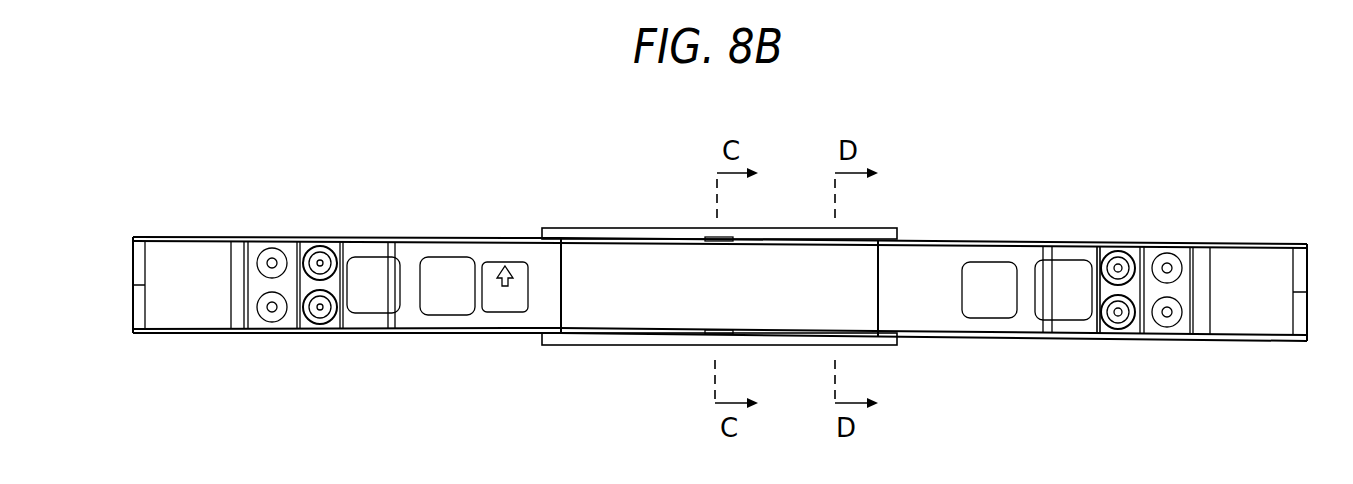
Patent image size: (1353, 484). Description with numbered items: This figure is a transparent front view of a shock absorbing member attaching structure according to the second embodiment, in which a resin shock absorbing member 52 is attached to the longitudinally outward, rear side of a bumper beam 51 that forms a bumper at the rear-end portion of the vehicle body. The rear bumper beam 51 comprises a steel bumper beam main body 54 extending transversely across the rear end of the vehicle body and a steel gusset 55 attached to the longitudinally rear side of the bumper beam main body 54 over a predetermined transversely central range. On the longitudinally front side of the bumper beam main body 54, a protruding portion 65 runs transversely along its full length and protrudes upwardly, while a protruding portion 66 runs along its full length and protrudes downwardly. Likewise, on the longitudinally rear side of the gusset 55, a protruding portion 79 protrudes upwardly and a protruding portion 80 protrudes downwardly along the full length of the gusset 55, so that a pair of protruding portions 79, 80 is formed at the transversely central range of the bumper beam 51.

The bumper beam 51 is at (126, 254).
The shock absorbing member 52 is at (573, 351).
The bumper beam main body 54 is at (1256, 275).
The gusset 55 is at (857, 243).
The protruding portion 65 is at (440, 236).
The protruding portion 66 is at (458, 335).
The protruding portion 79 is at (647, 228).
The protruding portion 80 is at (627, 337).